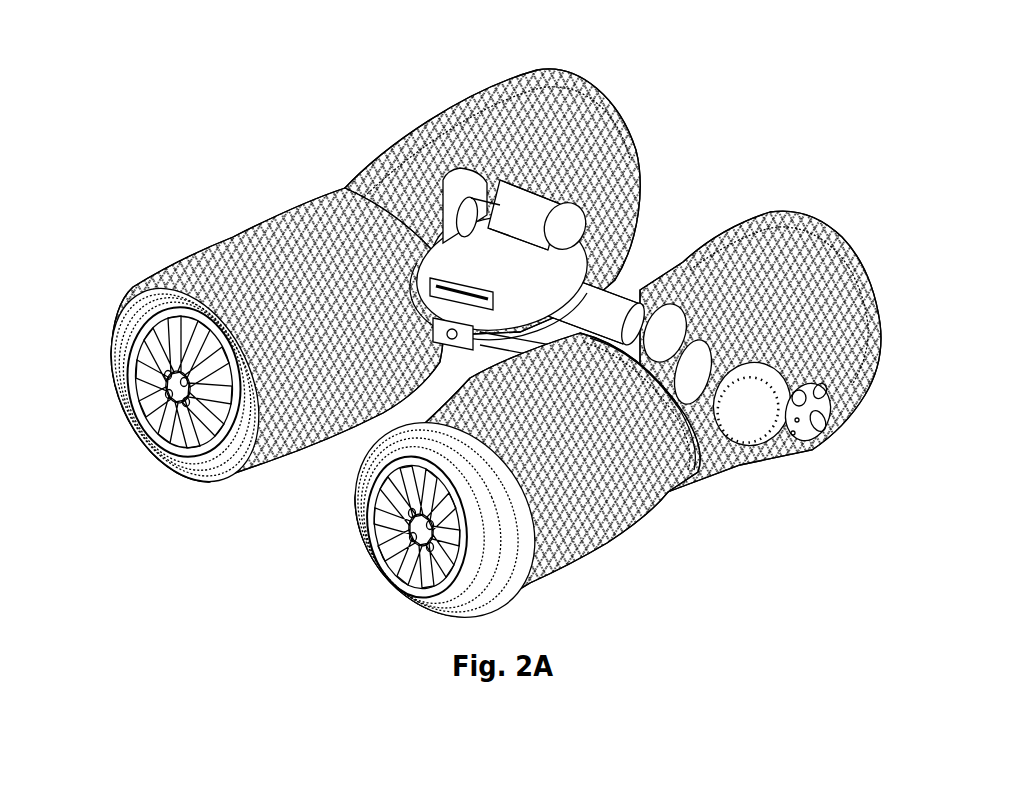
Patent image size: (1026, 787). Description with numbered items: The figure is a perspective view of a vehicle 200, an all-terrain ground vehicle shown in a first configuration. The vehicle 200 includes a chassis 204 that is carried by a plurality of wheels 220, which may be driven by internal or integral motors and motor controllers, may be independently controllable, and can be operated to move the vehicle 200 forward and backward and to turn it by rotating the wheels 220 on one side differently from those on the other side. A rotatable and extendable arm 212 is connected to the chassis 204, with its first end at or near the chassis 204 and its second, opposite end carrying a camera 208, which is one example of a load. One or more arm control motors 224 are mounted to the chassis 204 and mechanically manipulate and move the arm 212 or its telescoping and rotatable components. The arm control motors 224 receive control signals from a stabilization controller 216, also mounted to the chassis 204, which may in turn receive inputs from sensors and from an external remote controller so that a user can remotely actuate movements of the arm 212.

The vehicle 200 is at (468, 330).
The chassis 204 is at (409, 293).
The camera 208 is at (843, 487).
The arm 212 is at (653, 237).
The stabilization controller 216 is at (383, 400).
The wheels 220 is at (120, 300).
The arm control motors 224 is at (487, 157).